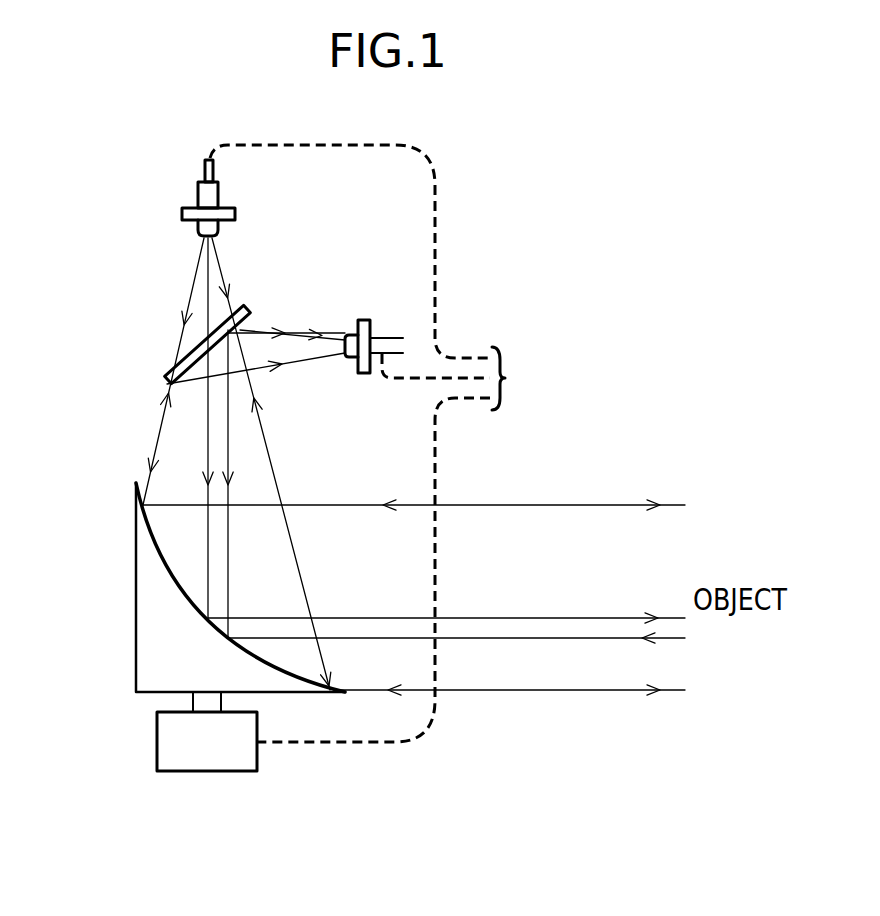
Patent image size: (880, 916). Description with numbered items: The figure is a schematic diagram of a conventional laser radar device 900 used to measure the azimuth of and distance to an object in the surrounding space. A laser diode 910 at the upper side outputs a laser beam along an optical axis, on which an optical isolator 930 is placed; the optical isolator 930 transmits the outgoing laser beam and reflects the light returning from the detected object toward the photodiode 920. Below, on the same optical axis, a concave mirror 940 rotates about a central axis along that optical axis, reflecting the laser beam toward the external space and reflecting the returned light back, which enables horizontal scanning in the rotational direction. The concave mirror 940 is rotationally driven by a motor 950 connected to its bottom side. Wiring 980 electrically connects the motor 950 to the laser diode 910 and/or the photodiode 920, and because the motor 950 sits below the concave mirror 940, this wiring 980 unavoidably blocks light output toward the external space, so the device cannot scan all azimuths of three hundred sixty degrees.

The laser radar device 900 is at (172, 178).
The laser diode 910 is at (205, 182).
The photodiode 920 is at (365, 320).
The optical isolator 930 is at (165, 383).
The concave mirror 940 is at (136, 592).
The motor 950 is at (157, 742).
The wiring 980 is at (437, 452).